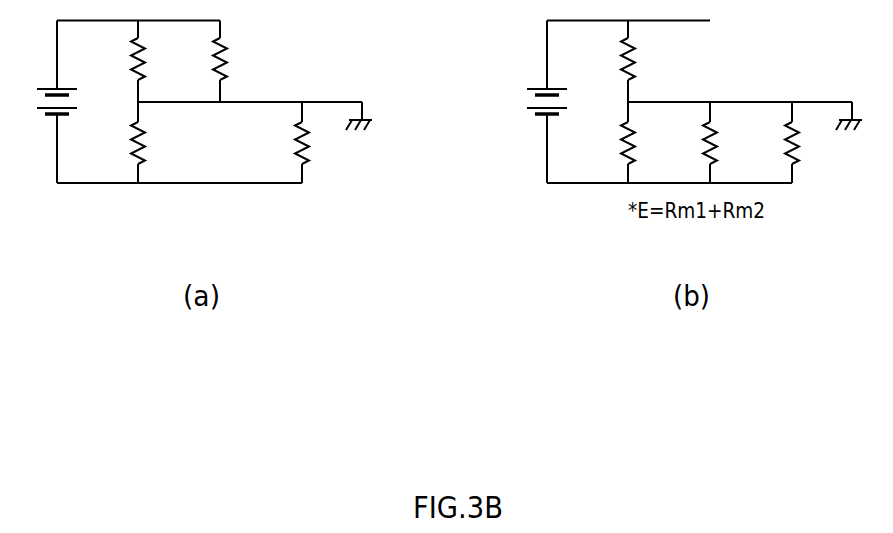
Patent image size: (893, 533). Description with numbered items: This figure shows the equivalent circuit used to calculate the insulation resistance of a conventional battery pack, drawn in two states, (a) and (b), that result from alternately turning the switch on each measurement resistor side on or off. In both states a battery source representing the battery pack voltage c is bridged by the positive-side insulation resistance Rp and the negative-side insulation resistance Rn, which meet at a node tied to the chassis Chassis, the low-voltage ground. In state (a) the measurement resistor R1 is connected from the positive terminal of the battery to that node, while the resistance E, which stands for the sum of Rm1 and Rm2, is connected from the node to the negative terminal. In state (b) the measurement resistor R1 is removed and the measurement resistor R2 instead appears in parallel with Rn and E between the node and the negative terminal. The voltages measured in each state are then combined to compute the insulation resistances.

The battery pack voltage c is at (289, 101).
The positive-side insulation resistance Rp is at (400, 59).
The negative-side insulation resistance Rn is at (400, 143).
The measurement resistor R1 is at (236, 59).
The measurement resistor R2 is at (728, 143).
The combined measurement resistance E is at (558, 143).
The chassis (LV.GND) Chassis is at (576, 81).